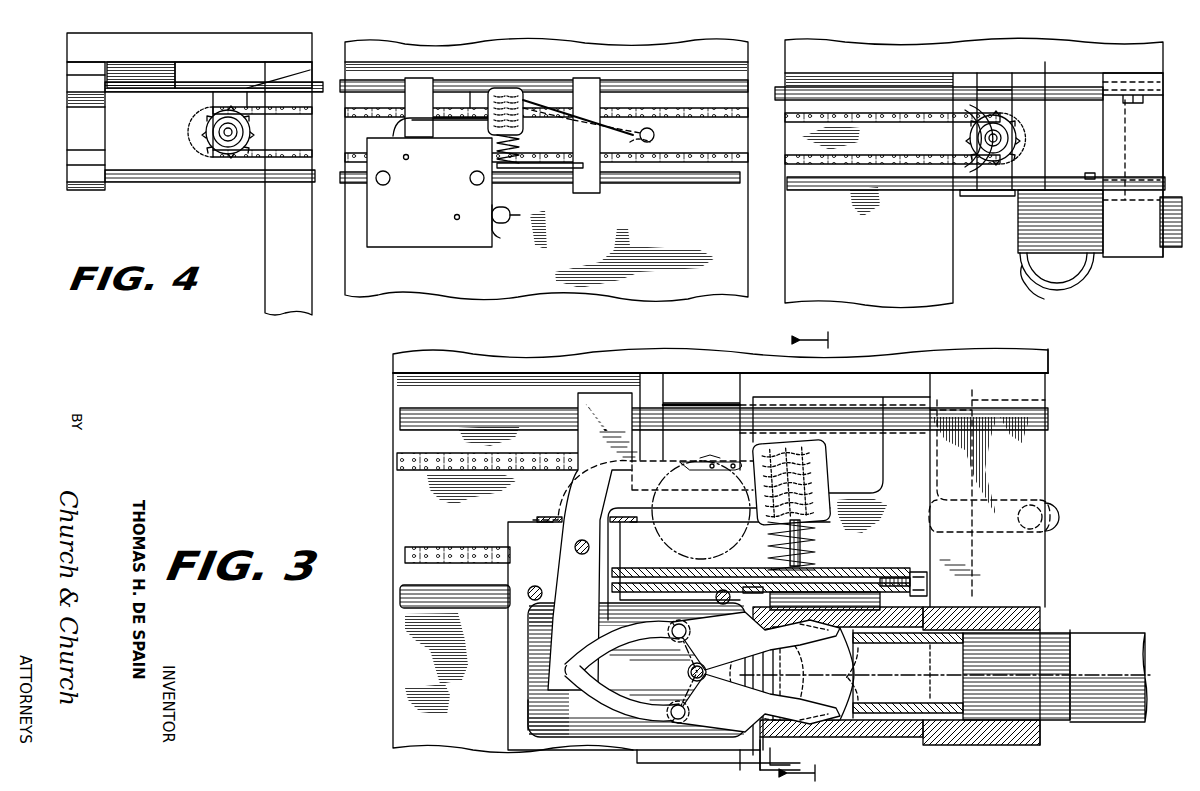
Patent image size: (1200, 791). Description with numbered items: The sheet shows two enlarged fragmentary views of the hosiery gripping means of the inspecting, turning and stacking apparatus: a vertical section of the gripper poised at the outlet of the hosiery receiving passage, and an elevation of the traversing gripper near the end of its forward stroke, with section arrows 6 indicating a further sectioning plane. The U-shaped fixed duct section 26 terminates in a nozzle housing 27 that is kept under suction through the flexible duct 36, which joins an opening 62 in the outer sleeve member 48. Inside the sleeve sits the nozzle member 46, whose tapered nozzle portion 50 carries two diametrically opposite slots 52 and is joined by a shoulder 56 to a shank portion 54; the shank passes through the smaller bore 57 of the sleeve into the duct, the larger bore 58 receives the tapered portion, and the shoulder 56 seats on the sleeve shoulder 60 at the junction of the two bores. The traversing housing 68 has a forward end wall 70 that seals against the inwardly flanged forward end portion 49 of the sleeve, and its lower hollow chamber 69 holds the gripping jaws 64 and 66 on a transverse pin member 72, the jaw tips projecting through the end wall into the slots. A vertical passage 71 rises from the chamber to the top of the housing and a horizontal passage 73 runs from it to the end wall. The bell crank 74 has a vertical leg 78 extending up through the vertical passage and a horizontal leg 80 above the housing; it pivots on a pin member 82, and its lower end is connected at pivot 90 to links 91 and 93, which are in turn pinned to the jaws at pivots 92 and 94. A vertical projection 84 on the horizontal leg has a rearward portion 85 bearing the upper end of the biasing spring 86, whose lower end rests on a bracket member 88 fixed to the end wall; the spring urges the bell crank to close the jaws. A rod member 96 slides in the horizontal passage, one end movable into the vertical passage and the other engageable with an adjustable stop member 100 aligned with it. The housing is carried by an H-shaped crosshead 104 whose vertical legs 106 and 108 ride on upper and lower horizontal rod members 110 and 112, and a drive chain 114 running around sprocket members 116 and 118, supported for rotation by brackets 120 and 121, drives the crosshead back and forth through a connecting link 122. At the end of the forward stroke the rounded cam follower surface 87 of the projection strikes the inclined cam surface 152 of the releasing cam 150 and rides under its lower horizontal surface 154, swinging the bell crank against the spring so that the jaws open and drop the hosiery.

In FIG. 3, the section line 6- 6 is at (810, 557).
In FIG. 4, the U-shaped fixed duct section 26 is at (1160, 250).
In FIG. 3, the U-shaped fixed duct section 26 is at (1093, 725).
In FIG. 4, the outlet nozzle housing 27 is at (1005, 224).
In FIG. 3, the outlet nozzle housing 27 is at (920, 757).
In FIG. 4, the flexible conduit or duct 36 is at (1070, 290).
In FIG. 3, the nozzle member 46 is at (915, 698).
In FIG. 3, the outer sleeve member 48 is at (913, 740).
In FIG. 3, the inwardly flanged forward end portion 49 is at (757, 755).
In FIG. 3, the tapered nozzle portion 50 is at (840, 684).
In FIG. 3, the slots 52 is at (808, 712).
In FIG. 3, the shank portion 54 is at (950, 700).
In FIG. 3, the shoulder 56 is at (870, 686).
In FIG. 3, the bore 57 is at (928, 704).
In FIG. 3, the bore of larger diameter 58 is at (778, 738).
In FIG. 3, the shoulder 60 is at (848, 748).
In FIG. 3, the opening 62 is at (862, 694).
In FIG. 4, the gripping jaw 64 is at (503, 219).
In FIG. 3, the gripping jaw 64 is at (756, 641).
In FIG. 4, the gripping jaw 66 is at (495, 230).
In FIG. 3, the gripping jaw 66 is at (756, 703).
In FIG. 4, the traversing housing 68 is at (440, 240).
In FIG. 3, the traversing housing 68 is at (500, 686).
In FIG. 3, the hollow chamber 69 is at (540, 710).
In FIG. 3, the forward end wall 70 is at (735, 755).
In FIG. 3, the vertical passage 71 is at (611, 594).
In FIG. 3, the pin member 72 is at (688, 673).
In FIG. 3, the horizontal passage 73 is at (720, 574).
In FIG. 4, the bell crank 74 is at (451, 117).
In FIG. 3, the bell crank 74 is at (539, 634).
In FIG. 3, the vertical leg 78 is at (592, 541).
In FIG. 3, the horizontal leg 80 is at (643, 491).
In FIG. 3, the pin member 82 is at (586, 544).
In FIG. 3, the vertical projection 84 is at (745, 458).
In FIG. 3, the laterally rearwardly projecting portion 85 is at (824, 452).
In FIG. 4, the biasing spring 86 is at (517, 135).
In FIG. 3, the biasing spring 86 is at (810, 530).
In FIG. 3, the rounded cam follower surface 87 is at (755, 440).
In FIG. 4, the bracket member 88 is at (528, 160).
In FIG. 3, the bracket member 88 is at (805, 555).
In FIG. 3, the pivotal connection 90 is at (590, 662).
In FIG. 3, the link 91 is at (622, 647).
In FIG. 3, the pivotal connection 92 is at (686, 635).
In FIG. 3, the link 93 is at (622, 693).
In FIG. 3, the pivotal connection 94 is at (683, 713).
In FIG. 3, the rod member 96 is at (653, 574).
In FIG. 3, the adjustable stop member 100 is at (912, 582).
In FIG. 4, the crosshead or carriage 104 is at (562, 204).
In FIG. 4, the vertical leg 106 is at (403, 122).
In FIG. 4, the vertical leg 108 is at (600, 192).
In FIG. 4, the upper horizontal rod member 110 is at (470, 86).
In FIG. 3, the upper horizontal rod member 110 is at (395, 412).
In FIG. 4, the lower horizontal rod member 112 is at (232, 183).
In FIG. 3, the lower horizontal rod member 112 is at (398, 598).
In FIG. 4, the drive chain 114 is at (252, 139).
In FIG. 3, the drive chain 114 is at (432, 546).
In FIG. 4, the sprocket member 116 is at (1018, 133).
In FIG. 4, the sprocket member 118 is at (204, 146).
In FIG. 4, the bracket 120 is at (1015, 103).
In FIG. 4, the bracket 121 is at (216, 110).
In FIG. 4, the connecting link 122 is at (650, 136).
In FIG. 4, the cam member 150 is at (171, 106).
In FIG. 4, the inclined cam surface 152 is at (282, 82).
In FIG. 4, the lower horizontal surface 154 is at (214, 92).